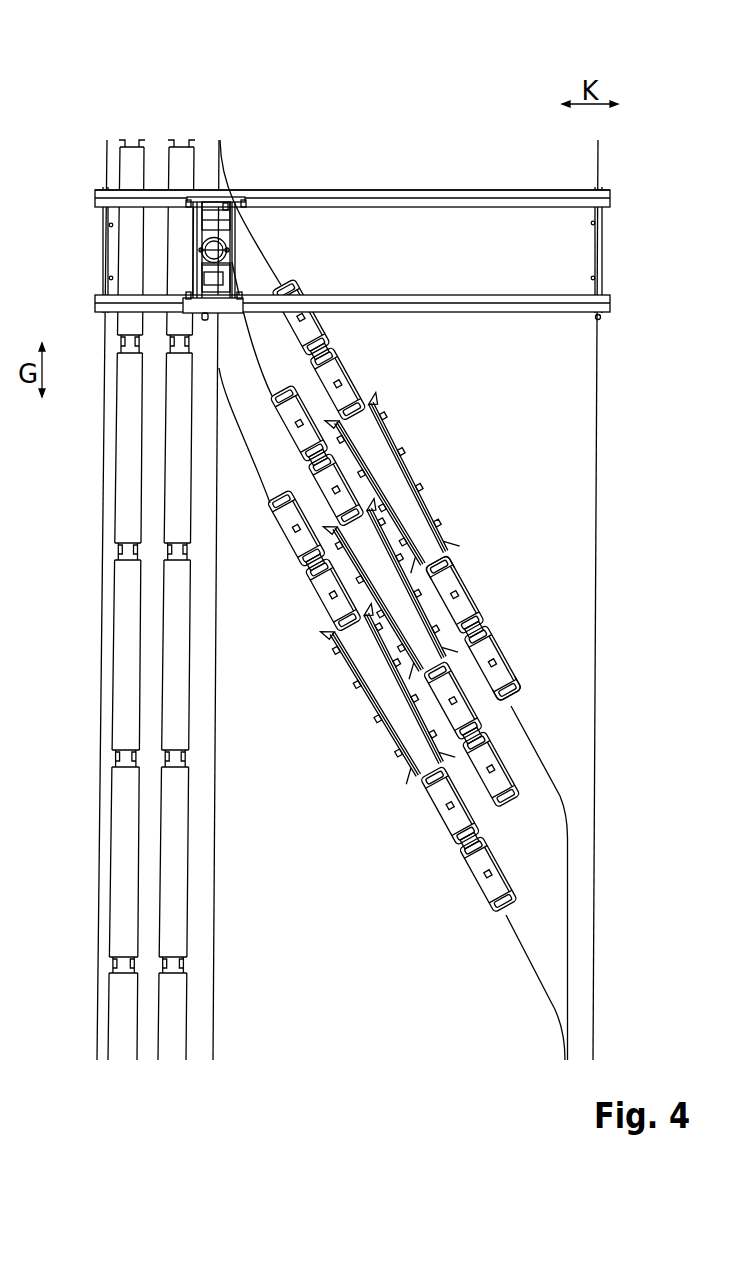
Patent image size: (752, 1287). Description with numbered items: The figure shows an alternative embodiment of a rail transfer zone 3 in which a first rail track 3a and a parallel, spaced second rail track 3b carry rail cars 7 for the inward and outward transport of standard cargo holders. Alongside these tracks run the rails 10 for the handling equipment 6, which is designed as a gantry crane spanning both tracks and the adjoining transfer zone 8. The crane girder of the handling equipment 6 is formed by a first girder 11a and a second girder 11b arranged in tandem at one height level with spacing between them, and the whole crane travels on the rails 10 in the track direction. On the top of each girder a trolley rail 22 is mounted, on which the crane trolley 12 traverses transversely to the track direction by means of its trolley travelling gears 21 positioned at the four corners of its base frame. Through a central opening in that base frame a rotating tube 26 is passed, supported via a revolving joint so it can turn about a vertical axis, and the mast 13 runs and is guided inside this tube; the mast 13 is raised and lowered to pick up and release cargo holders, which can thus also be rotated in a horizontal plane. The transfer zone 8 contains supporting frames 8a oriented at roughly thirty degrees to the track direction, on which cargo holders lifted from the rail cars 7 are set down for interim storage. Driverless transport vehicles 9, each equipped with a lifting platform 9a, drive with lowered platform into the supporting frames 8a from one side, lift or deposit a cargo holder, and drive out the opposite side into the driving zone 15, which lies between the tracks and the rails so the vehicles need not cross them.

The rail transfer zone 3 is at (348, 620).
The first rail track 3a is at (118, 985).
The second rail track 3b is at (170, 1022).
The handling equipment 6 is at (387, 212).
The rail cars 7 is at (170, 880).
The transfer zone 8 is at (441, 661).
The supporting frames 8a is at (422, 494).
The driverless transport vehicles 9 is at (477, 638).
The lifting platform 9a is at (443, 582).
The rails 10 is at (600, 383).
The first girder 11a is at (520, 192).
The second girder 11b is at (515, 311).
The crane trolley 12 is at (230, 278).
The mast 13 is at (225, 277).
The driving zone 15 is at (313, 990).
The trolley travelling gears 21 is at (244, 192).
The trolley rail 22 is at (486, 192).
The rotating tube 26 is at (228, 252).